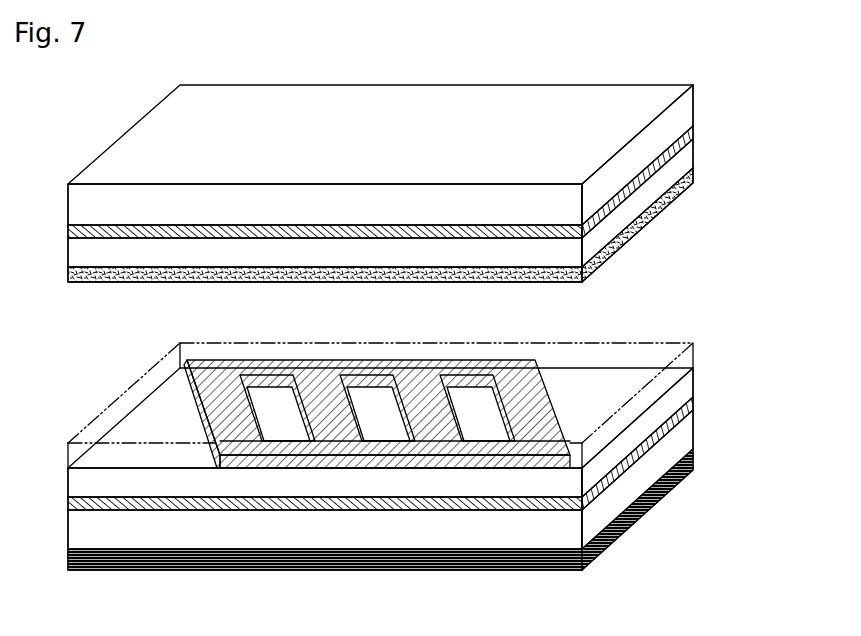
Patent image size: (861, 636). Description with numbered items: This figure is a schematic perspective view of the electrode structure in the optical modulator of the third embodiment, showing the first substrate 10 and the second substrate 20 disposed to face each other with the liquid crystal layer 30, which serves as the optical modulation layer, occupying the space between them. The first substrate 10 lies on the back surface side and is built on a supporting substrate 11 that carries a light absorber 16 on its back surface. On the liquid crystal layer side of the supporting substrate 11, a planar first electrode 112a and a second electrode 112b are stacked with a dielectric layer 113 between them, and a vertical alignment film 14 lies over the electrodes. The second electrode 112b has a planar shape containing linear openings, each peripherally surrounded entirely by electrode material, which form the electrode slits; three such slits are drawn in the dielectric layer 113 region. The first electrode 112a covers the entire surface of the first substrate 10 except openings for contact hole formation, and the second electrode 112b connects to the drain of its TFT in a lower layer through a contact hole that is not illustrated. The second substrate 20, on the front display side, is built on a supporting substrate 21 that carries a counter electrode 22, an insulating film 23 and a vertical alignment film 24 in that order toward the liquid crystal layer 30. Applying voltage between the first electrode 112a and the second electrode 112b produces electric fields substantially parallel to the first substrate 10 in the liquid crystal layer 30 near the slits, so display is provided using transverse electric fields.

The second substrate 20 is at (763, 73).
The supporting substrate 21 is at (683, 112).
The counter electrode 22 is at (693, 131).
The insulating film 23 is at (688, 157).
The vertical alignment film 24 is at (692, 178).
The liquid crystal layer 30 is at (60, 285).
The first substrate 10 is at (793, 343).
The vertical alignment film 14 is at (685, 360).
The dielectric layer 113 is at (683, 390).
The first electrode 112a is at (692, 410).
The second electrode 112b is at (342, 467).
The supporting substrate 11 is at (683, 438).
The light absorber 16 is at (693, 466).